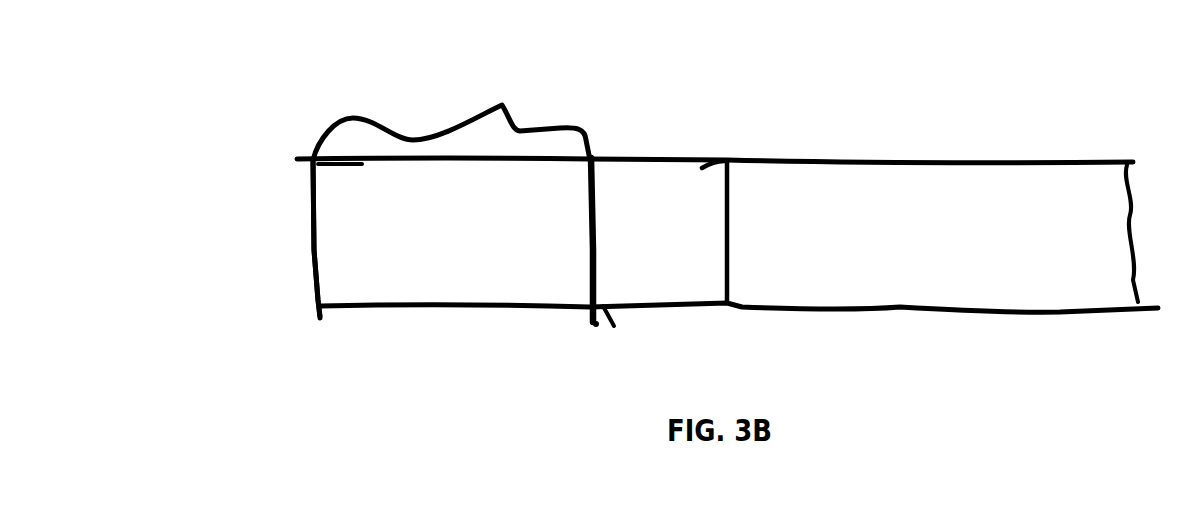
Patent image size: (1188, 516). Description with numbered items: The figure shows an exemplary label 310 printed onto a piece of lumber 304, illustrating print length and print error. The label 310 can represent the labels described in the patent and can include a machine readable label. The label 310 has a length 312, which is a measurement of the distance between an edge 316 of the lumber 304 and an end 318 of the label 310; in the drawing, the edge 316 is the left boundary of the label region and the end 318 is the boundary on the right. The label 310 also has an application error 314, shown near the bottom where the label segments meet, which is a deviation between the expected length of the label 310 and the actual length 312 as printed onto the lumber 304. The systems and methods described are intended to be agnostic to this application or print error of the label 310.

The lumber 304 is at (718, 84).
The label 310 is at (474, 252).
The length 312 is at (451, 111).
The application error 314 is at (592, 325).
The edge 316 is at (313, 216).
The end 318 is at (597, 223).